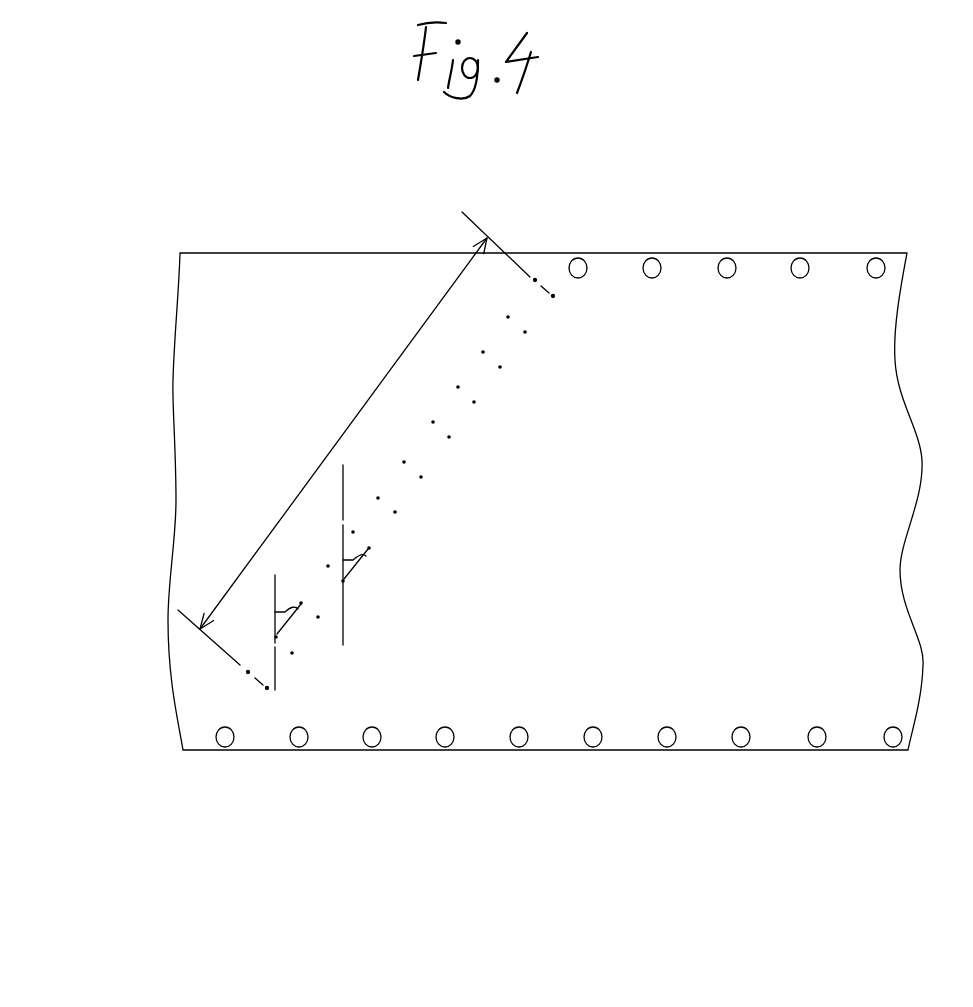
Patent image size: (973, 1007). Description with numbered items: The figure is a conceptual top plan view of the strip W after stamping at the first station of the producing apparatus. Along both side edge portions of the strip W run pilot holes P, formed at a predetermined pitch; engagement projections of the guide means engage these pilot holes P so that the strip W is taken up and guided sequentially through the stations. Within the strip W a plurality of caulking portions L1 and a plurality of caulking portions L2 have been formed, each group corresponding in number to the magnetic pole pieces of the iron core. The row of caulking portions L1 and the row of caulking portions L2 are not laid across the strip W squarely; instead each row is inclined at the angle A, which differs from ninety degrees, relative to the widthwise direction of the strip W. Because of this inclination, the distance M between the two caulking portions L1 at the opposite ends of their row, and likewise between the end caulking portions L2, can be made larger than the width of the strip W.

The strip W is at (243, 270).
The pilot holes P is at (795, 270).
The distance M is at (366, 451).
The caulking portions L2 is at (550, 340).
The caulking portions L1 is at (525, 283).
The angle A is at (366, 556).